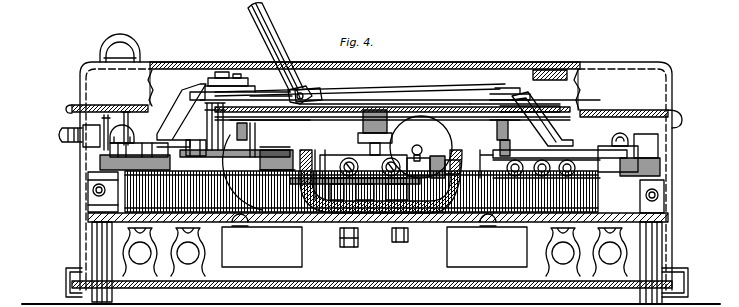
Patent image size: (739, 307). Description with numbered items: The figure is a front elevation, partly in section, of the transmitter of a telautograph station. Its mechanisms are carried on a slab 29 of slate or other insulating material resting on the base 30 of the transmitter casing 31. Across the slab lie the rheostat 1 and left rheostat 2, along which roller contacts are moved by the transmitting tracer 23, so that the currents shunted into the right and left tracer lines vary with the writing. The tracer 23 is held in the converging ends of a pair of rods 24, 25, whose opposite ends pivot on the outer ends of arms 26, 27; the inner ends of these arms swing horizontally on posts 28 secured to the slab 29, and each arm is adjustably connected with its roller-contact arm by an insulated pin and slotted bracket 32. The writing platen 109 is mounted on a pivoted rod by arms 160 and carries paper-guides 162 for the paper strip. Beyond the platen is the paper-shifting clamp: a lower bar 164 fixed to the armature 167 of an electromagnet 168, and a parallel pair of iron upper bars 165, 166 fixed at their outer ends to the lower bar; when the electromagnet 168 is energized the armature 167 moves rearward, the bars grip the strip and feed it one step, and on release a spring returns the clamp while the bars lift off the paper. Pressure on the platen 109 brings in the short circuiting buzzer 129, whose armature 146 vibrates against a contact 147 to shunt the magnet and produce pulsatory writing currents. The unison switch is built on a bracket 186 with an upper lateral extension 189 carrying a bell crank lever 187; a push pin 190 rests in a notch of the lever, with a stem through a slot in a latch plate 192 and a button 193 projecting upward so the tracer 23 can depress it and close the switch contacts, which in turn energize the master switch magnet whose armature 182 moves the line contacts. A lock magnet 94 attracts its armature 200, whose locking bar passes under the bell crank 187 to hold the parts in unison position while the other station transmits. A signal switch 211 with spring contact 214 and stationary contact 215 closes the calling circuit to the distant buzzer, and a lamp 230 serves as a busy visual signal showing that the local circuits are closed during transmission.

The rheostat 1 is at (624, 193).
The left rheostat 2 is at (126, 184).
The transmitting tracer 23 is at (280, 40).
The rod 24 is at (432, 94).
The rod 25 is at (248, 78).
The arm 26 is at (560, 114).
The arm 27 is at (178, 108).
The post 28 is at (140, 134).
The slab 29 is at (440, 223).
The base 30 is at (375, 251).
The transmitter casing 31 is at (197, 63).
The pin and slotted bracket 32 is at (206, 142).
The lock magnet 94 is at (273, 146).
The writing platen 109 is at (302, 155).
The short circuiting buzzer 129 is at (318, 224).
The armature 146 is at (448, 158).
The contact 147 is at (392, 224).
The arms 160 is at (498, 132).
The paper-guides 162 is at (510, 100).
The lower bar 164 is at (514, 124).
The upper bar 165 is at (358, 101).
The upper bar 166 is at (418, 89).
The armature 167 is at (424, 142).
The electromagnet 168 is at (352, 128).
The armature 182 is at (553, 164).
The bracket 186 is at (236, 223).
The bell crank lever 187 is at (253, 148).
The upper lateral extension 189 is at (286, 88).
The push pin 190 is at (215, 152).
The latch plate 192 is at (208, 128).
The button 193 is at (192, 91).
The armature 200 is at (282, 223).
The switch 211 is at (62, 130).
The spring contact 214 is at (104, 122).
The stationary contact 215 is at (125, 112).
The lamp 230 is at (128, 51).